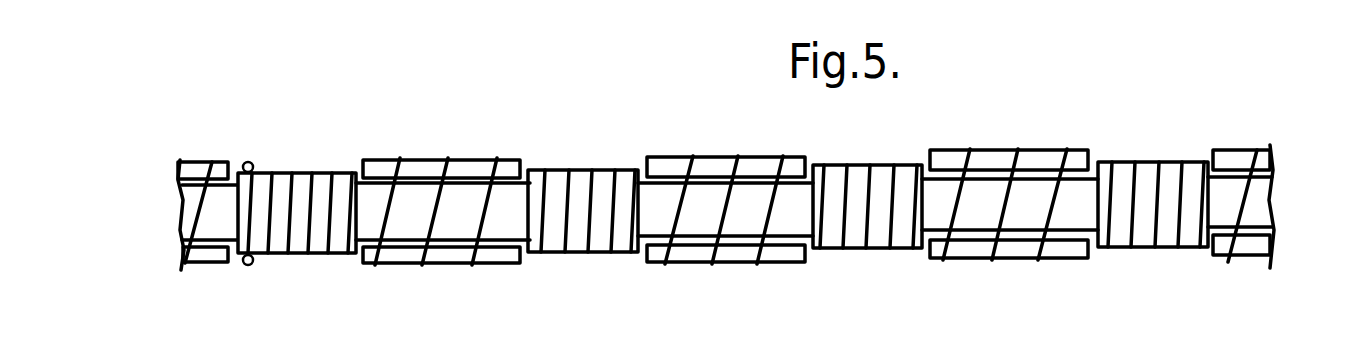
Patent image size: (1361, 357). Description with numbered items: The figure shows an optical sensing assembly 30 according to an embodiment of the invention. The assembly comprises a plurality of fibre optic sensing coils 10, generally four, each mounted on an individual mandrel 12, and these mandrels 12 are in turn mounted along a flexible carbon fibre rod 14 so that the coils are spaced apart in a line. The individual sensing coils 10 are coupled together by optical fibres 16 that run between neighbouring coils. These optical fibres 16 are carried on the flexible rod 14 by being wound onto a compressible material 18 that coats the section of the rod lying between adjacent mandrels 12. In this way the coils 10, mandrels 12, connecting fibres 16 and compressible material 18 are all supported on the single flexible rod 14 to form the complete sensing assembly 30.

The fibre optic sensing coil 10 is at (292, 172).
The mandrel 12 is at (357, 172).
The flexible carbon fibre rod 14 is at (1253, 202).
The optical fibre 16 is at (450, 158).
The compressible material 18 is at (503, 254).
The optical sensing assembly 30 is at (1112, 103).